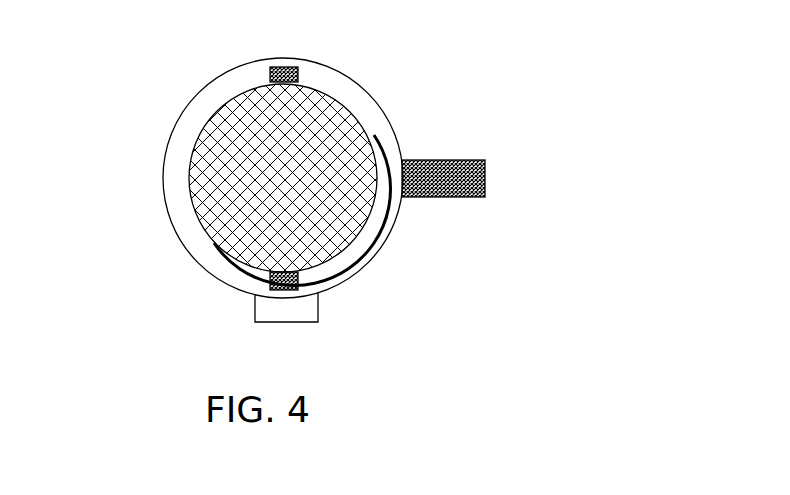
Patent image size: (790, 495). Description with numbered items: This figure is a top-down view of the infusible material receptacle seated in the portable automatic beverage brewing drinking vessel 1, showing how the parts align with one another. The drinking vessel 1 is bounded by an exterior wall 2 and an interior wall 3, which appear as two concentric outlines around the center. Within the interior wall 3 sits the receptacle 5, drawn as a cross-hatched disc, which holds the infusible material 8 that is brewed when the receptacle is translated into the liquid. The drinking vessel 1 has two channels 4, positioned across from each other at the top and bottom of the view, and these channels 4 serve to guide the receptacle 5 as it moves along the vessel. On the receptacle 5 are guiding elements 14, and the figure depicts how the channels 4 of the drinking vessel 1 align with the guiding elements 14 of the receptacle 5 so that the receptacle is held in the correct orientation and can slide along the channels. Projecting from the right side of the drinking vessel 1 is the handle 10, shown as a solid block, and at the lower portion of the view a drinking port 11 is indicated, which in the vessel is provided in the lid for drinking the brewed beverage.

The drinking vessel 1 is at (455, 156).
The exterior wall 2 is at (363, 90).
The interior wall 3 is at (362, 128).
The channels 4 is at (299, 74).
The receptacle 5 is at (367, 218).
The infusible material 8 is at (377, 177).
The handle 10 is at (487, 175).
The drinking port 11 is at (318, 315).
The guiding elements 14 is at (300, 279).